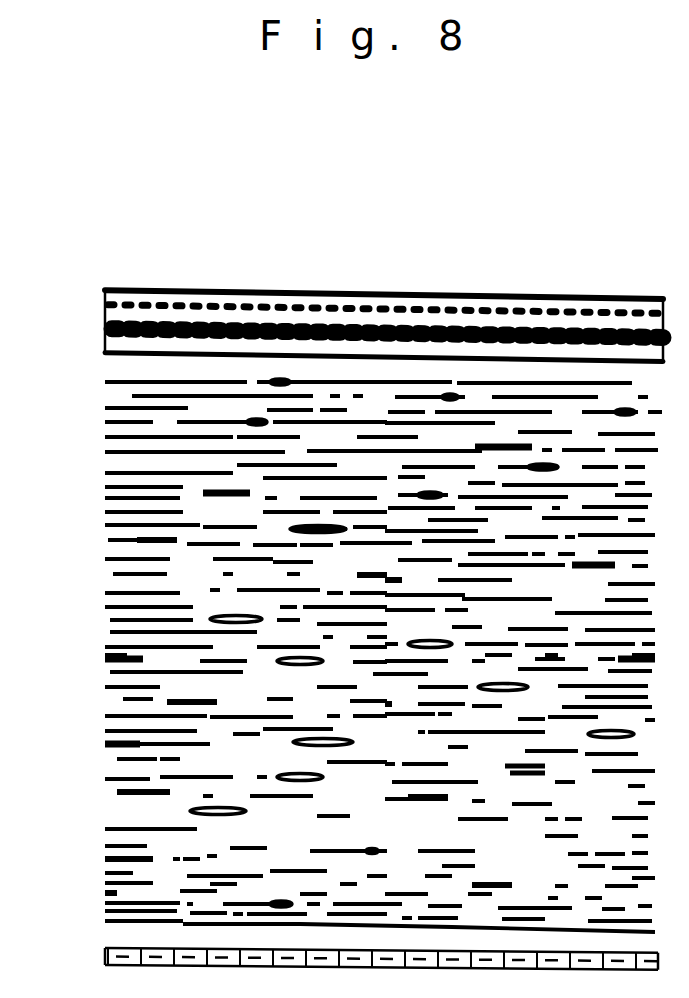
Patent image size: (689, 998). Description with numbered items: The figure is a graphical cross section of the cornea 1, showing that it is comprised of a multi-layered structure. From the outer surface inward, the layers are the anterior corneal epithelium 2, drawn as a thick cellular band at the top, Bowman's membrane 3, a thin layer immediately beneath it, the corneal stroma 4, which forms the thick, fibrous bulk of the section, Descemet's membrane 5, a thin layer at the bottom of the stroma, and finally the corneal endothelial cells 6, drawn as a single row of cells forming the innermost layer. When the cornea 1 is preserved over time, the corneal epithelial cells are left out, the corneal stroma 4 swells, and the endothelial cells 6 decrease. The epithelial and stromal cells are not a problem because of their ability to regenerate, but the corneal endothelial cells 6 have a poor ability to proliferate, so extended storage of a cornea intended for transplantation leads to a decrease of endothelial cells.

The cornea 1 is at (73, 104).
The anterior corneal epithelium 2 is at (104, 313).
The Bowman's membrane 3 is at (140, 362).
The corneal stroma 4 is at (135, 730).
The Descemet's membrane 5 is at (133, 930).
The corneal endothelial cells 6 is at (120, 964).